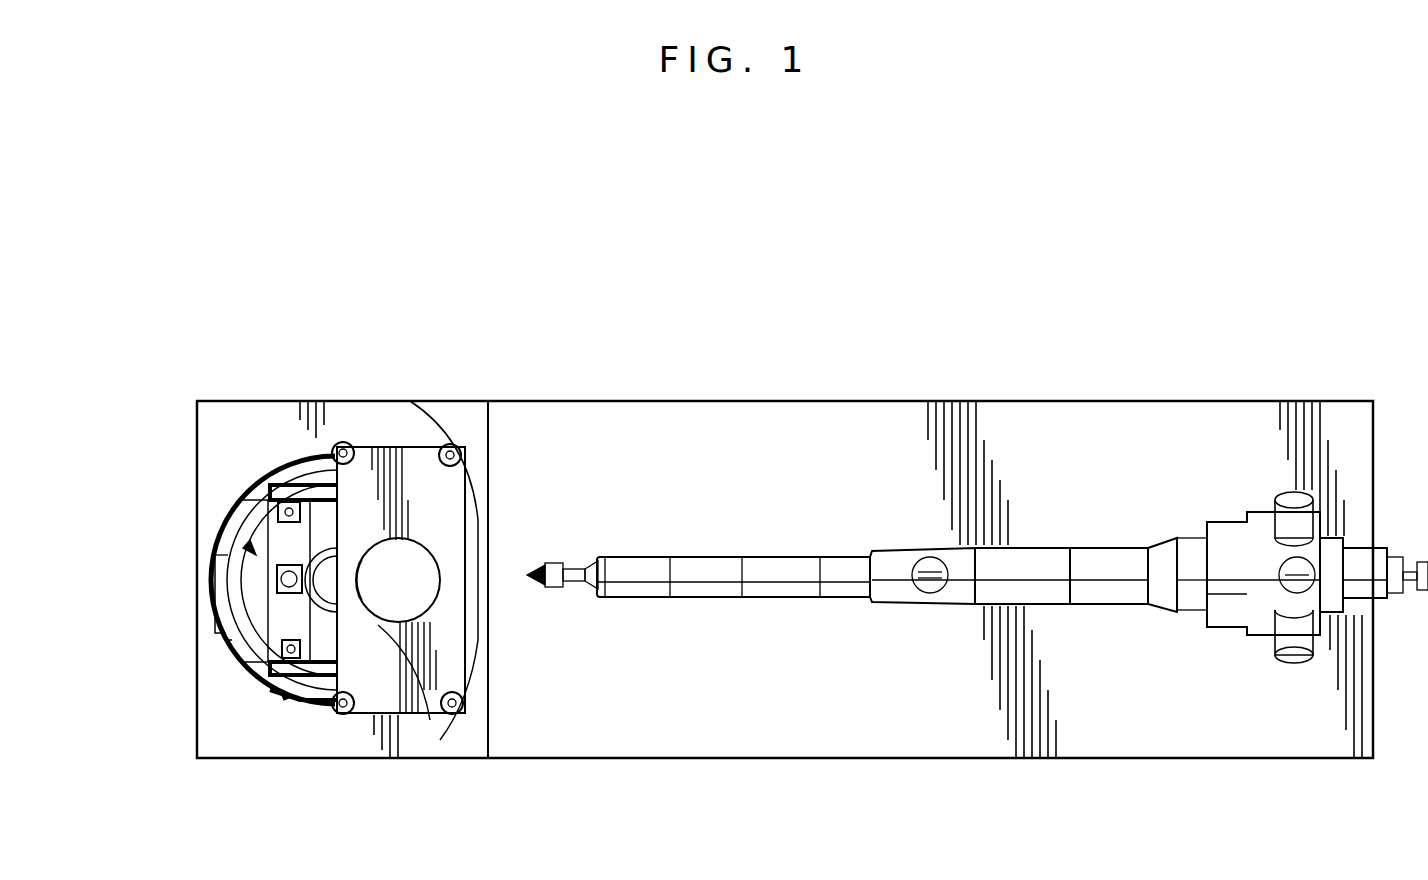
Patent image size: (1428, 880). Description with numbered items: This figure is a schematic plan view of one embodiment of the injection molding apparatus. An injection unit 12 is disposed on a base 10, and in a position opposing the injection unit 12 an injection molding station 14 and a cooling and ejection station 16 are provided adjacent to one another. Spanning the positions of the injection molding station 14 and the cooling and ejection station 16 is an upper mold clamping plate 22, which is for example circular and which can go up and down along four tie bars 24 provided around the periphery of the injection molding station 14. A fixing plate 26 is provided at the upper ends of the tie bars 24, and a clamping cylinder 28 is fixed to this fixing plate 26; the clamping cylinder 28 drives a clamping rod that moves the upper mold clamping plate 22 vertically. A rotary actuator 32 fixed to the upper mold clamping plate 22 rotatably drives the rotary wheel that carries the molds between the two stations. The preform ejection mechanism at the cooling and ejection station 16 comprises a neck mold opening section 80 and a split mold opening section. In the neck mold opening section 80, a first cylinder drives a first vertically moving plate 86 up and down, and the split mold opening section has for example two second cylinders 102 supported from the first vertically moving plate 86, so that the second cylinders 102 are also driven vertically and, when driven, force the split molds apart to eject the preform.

The base 10 is at (830, 760).
The injection unit 12 is at (750, 598).
The injection molding station 14 is at (465, 505).
The cooling and ejection station 16 is at (250, 545).
The upper mold clamping plate 22 is at (282, 712).
The tie bars 24 is at (352, 445).
The fixing plate 26 is at (392, 695).
The clamping cylinder 28 is at (392, 605).
The rotary actuator 32 is at (330, 560).
The neck mold opening section 80 is at (280, 580).
The first vertically moving plate 86 is at (213, 620).
The second cylinders 102 is at (262, 530).